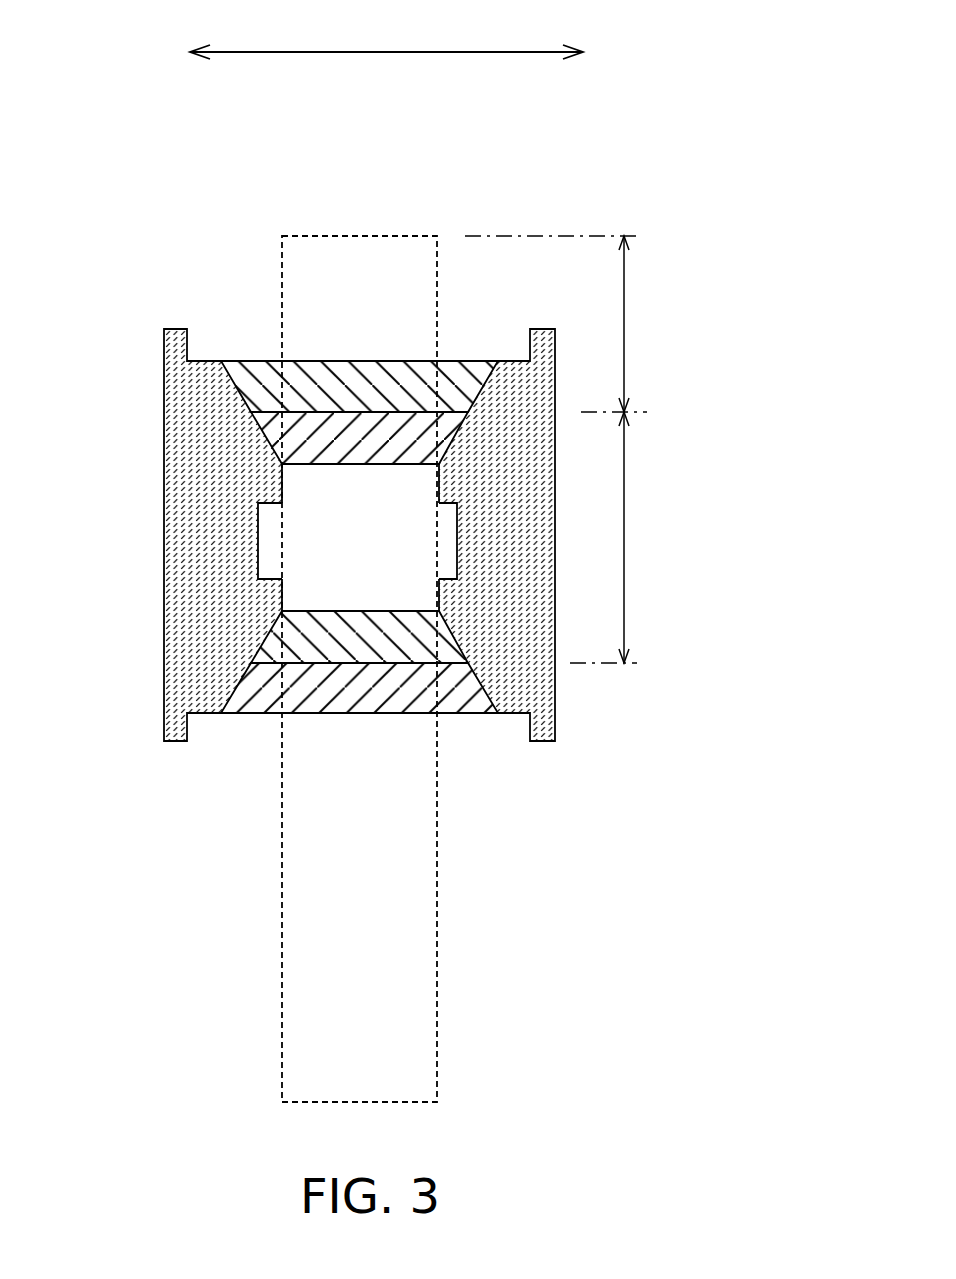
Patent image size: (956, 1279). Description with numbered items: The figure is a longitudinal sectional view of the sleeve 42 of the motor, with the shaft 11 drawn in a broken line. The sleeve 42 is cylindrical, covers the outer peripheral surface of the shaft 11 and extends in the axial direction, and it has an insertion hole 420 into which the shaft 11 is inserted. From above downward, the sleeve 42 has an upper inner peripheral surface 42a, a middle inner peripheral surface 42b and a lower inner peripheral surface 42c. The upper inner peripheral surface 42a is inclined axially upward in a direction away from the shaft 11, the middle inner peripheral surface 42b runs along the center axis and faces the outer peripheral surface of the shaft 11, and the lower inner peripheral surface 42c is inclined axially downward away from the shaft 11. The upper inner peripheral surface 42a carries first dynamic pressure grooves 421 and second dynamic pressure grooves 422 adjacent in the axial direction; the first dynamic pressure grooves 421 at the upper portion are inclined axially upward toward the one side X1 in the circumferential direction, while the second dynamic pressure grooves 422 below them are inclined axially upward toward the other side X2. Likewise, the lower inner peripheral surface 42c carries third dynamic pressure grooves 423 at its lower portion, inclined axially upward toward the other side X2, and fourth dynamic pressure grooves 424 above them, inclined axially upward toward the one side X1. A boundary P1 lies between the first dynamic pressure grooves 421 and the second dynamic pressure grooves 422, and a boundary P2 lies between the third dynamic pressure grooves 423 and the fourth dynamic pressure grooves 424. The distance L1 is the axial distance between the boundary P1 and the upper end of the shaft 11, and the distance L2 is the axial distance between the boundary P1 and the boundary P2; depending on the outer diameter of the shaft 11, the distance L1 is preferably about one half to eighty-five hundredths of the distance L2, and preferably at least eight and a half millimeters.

The shaft 11 is at (428, 236).
The sleeve 42 is at (195, 413).
The upper inner peripheral surface 42a is at (357, 402).
The middle inner peripheral surface 42b is at (273, 520).
The lower inner peripheral surface 42c is at (351, 672).
The insertion hole 420 is at (278, 593).
The first dynamic pressure grooves 421 is at (340, 395).
The second dynamic pressure grooves 422 is at (337, 427).
The third dynamic pressure grooves 423 is at (350, 670).
The fourth dynamic pressure grooves 424 is at (343, 637).
The boundary P1 is at (360, 412).
The boundary P2 is at (367, 665).
The distance L1 is at (572, 324).
The distance L2 is at (624, 537).
The one side X1 is at (371, 31).
The other side X2 is at (565, 31).